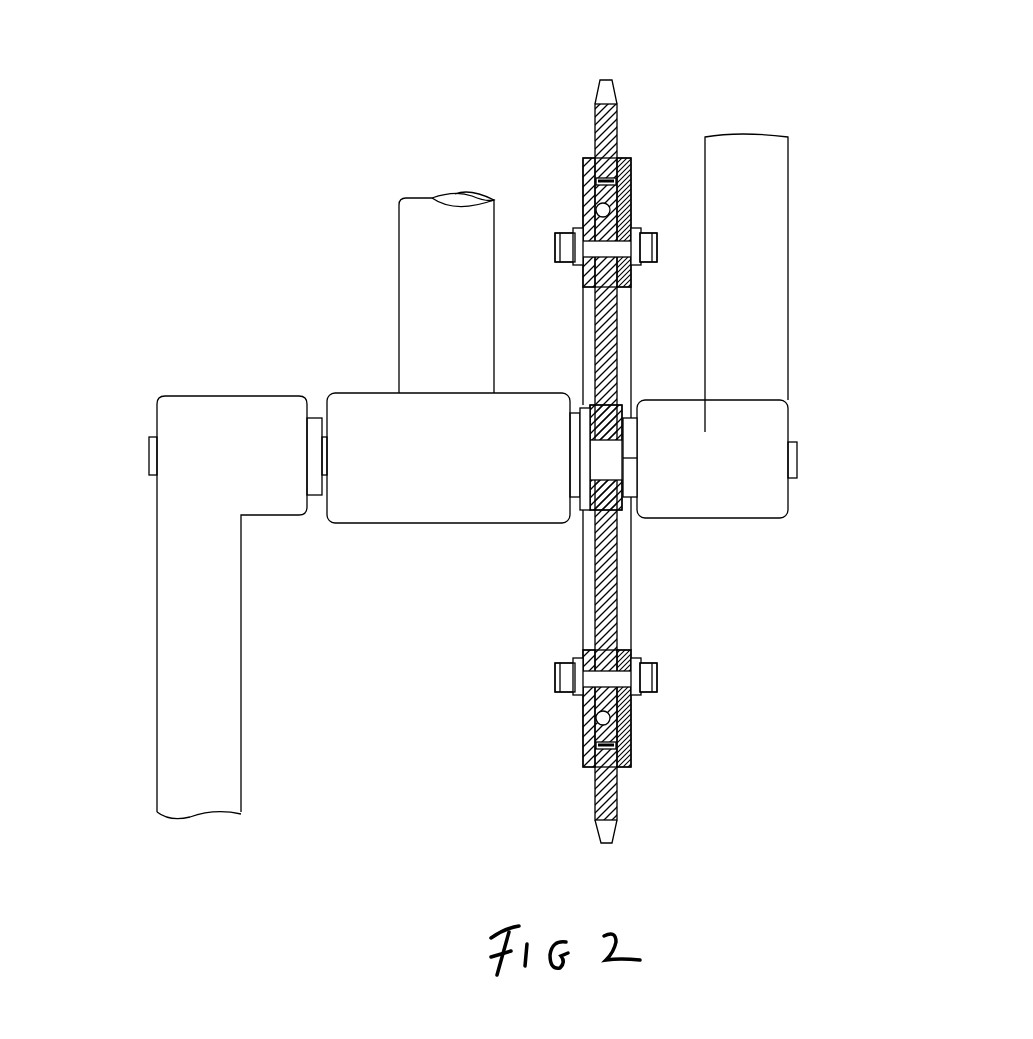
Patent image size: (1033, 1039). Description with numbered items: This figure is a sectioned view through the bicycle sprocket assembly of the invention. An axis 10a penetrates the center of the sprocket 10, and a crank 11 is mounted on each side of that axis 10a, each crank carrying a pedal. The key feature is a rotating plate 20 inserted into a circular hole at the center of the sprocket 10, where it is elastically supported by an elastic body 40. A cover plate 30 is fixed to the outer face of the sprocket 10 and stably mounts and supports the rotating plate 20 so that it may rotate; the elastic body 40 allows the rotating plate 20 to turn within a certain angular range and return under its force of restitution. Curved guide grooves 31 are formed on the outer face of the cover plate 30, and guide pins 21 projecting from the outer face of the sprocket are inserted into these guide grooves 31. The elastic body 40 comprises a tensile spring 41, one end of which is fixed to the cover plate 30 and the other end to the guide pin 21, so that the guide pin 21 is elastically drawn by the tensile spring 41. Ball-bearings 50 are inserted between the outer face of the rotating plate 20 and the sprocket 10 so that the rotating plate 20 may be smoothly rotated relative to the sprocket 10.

The sprocket 10 is at (620, 98).
The axis 10a is at (612, 460).
The crank 11 is at (196, 590).
The rotating plate 20 is at (613, 570).
The guide pin 21 is at (650, 251).
The cover plate 30 is at (630, 728).
The curved guide groove 31 is at (647, 227).
The elastic body 40 is at (573, 230).
The tensile spring 41 is at (565, 462).
The ball-bearing 50 is at (585, 716).